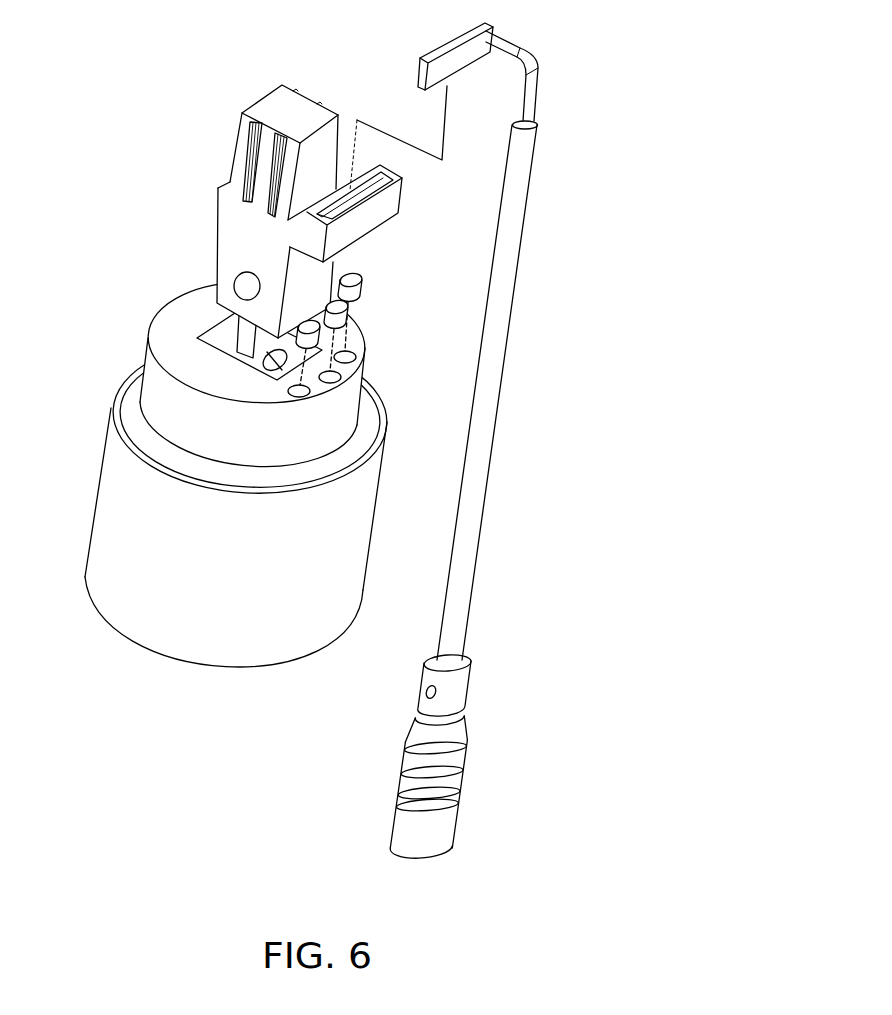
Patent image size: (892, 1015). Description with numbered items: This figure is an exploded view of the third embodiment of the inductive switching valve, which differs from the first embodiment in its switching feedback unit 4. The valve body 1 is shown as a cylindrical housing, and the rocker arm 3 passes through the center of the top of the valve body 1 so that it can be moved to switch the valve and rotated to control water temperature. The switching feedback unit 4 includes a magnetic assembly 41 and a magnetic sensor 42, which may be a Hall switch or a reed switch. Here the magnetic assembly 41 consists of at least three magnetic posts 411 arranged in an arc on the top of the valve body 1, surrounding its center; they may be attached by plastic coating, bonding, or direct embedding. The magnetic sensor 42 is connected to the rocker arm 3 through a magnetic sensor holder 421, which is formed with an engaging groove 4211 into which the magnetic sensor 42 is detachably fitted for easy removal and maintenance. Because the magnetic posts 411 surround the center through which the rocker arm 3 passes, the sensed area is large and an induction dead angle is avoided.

The valve body 1 is at (163, 393).
The rocker arm 3 is at (283, 211).
The magnetic sensor holder 421 is at (317, 173).
The engaging groove 4211 is at (363, 190).
The switching feedback unit 4 is at (502, 441).
The magnetic assembly 41 is at (468, 490).
The magnetic posts 411 is at (360, 280).
The magnetic sensor 42 is at (465, 60).